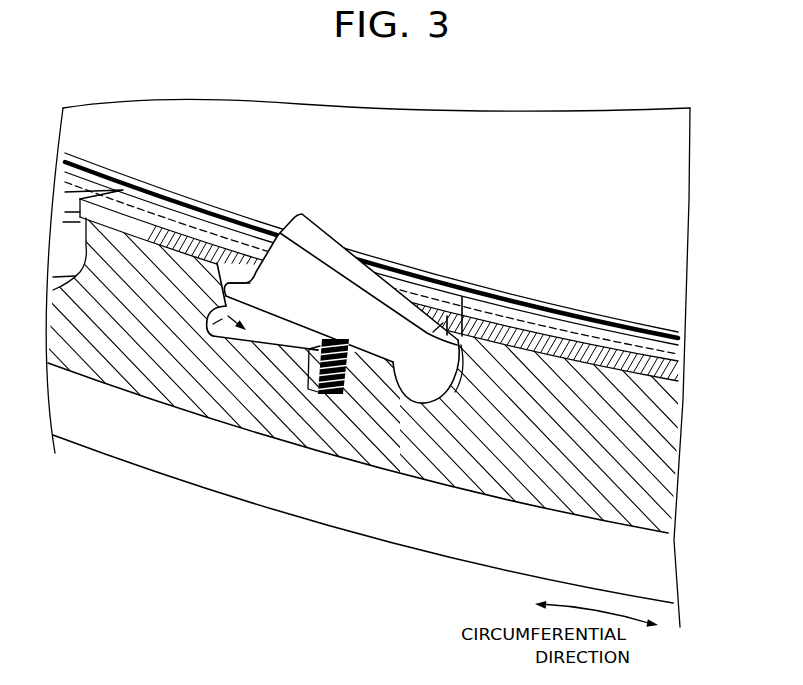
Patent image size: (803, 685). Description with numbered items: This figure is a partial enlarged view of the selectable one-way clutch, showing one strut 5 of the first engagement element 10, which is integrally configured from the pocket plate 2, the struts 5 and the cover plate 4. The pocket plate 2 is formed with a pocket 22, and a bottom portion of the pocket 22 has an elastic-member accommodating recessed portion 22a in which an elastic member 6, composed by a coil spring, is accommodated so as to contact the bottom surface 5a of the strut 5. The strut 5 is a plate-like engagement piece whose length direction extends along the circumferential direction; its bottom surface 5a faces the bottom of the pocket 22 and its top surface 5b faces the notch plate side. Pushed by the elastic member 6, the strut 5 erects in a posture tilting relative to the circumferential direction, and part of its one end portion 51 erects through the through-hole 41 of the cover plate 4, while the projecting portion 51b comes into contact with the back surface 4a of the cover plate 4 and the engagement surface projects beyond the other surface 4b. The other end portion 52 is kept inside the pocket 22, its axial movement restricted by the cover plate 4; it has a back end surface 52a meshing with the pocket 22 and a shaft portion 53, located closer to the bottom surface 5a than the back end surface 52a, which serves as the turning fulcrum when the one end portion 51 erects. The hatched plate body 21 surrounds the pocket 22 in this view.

The pocket plate 2 is at (661, 570).
The first portion of base member 21 is at (650, 460).
The pocket 22 is at (212, 305).
The elastic-member accommodating recessed portion 22a is at (310, 390).
The cover plate 4 is at (675, 350).
The back surface 4a is at (188, 256).
The other surface 4b is at (627, 333).
The through-hole 41 is at (437, 280).
The strut 5 is at (348, 252).
The bottom surface 5a is at (280, 295).
The top surface 5b is at (323, 243).
The one end portion 51 is at (272, 210).
The projecting portion 51b is at (233, 288).
The other end portion 52 is at (468, 349).
The back end surface 52a is at (465, 378).
The shaft portion 53 is at (409, 393).
The elastic member 6 is at (327, 397).
The first engagement element 10 is at (603, 264).